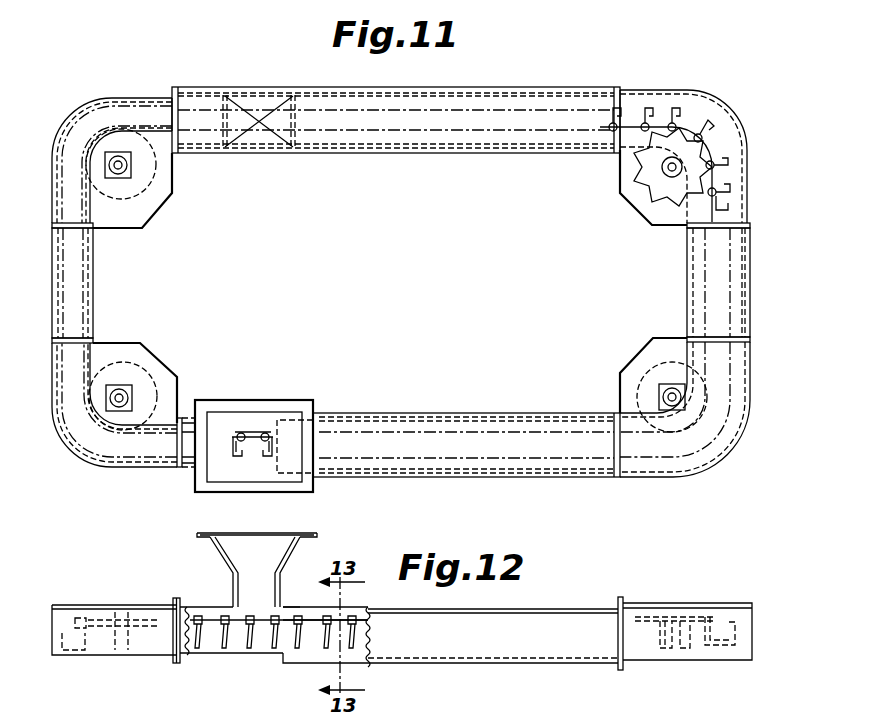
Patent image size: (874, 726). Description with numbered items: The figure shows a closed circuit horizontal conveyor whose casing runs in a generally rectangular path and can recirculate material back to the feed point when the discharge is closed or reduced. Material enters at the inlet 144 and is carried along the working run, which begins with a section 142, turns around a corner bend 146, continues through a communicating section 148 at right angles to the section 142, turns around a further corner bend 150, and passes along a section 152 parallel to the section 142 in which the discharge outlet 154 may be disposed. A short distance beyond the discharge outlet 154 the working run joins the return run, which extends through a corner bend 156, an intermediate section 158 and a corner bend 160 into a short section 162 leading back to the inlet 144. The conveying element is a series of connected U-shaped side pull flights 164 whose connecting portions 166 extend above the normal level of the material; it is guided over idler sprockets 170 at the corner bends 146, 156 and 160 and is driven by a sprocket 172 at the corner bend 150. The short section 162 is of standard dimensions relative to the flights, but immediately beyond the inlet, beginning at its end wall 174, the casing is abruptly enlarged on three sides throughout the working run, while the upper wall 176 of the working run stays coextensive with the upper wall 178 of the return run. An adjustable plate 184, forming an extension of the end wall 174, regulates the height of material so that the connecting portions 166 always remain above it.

In FIG. 11, the section 142 is at (464, 413).
In FIG. 12, the section 142 is at (415, 664).
In FIG. 12, the inlet 144 is at (277, 533).
In FIG. 11, the corner bend 146 is at (703, 470).
In FIG. 12, the corner bend 146 is at (685, 661).
In FIG. 11, the communicating section 148 is at (690, 286).
In FIG. 11, the corner bend 150 is at (714, 110).
In FIG. 11, the section 152 is at (495, 87).
In FIG. 11, the discharge outlet 154 is at (262, 149).
In FIG. 11, the corner bend 156 is at (94, 103).
In FIG. 11, the intermediate section 158 is at (92, 288).
In FIG. 11, the corner bend 160 is at (97, 468).
In FIG. 12, the corner bend 160 is at (108, 657).
In FIG. 11, the short section 162 is at (186, 470).
In FIG. 12, the short section 162 is at (222, 655).
In FIG. 12, the U-shaped side pull flights 164 is at (270, 640).
In FIG. 12, the connecting portions 166 is at (240, 617).
In FIG. 11, the idler sprockets 170 is at (148, 190).
In FIG. 11, the sprocket 172 is at (660, 200).
In FIG. 12, the end wall 174 is at (285, 580).
In FIG. 12, the upper wall 176 is at (352, 606).
In FIG. 12, the upper wall 178 is at (207, 605).
In FIG. 12, the adjustable plate 184 is at (282, 610).